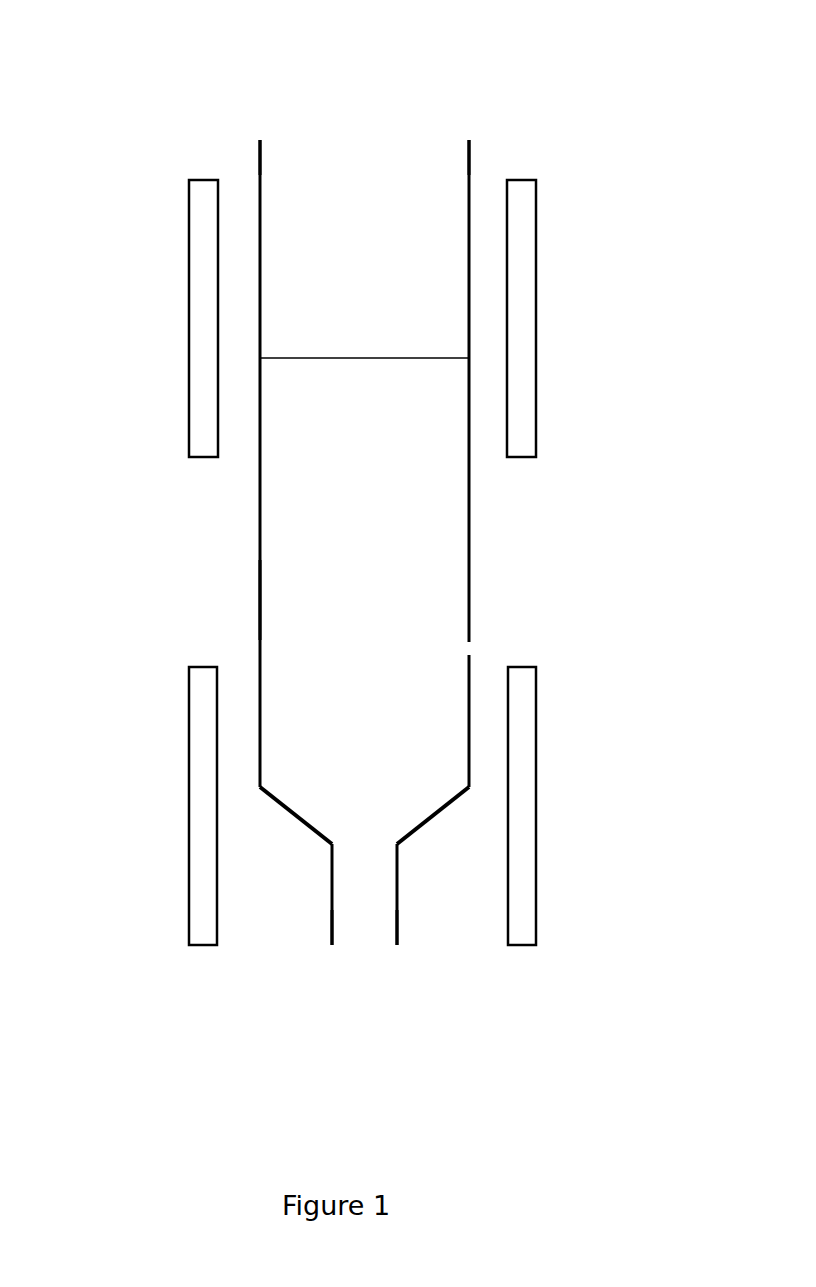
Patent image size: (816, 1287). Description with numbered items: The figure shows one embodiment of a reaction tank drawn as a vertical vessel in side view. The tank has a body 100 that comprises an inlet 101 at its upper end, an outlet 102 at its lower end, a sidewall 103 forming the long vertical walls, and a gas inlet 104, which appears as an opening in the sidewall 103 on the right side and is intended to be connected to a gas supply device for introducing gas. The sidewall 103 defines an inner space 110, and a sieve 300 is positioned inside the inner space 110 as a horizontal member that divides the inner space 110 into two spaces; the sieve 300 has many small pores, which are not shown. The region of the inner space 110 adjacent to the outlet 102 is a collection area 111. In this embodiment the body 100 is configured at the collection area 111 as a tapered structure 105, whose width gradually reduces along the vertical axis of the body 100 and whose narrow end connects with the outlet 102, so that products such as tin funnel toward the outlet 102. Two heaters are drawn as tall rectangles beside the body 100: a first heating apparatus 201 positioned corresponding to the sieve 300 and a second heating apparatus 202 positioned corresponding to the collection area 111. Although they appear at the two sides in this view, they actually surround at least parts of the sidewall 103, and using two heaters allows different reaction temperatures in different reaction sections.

The body 100 is at (260, 160).
The inlet 101 is at (397, 168).
The outlet 102 is at (372, 947).
The sidewall 103 is at (260, 536).
The gas inlet 104 is at (465, 648).
The tapered structure 105 is at (318, 837).
The inner space 110 is at (285, 595).
The collection area 111 is at (298, 780).
The first heating apparatus 201 is at (199, 306).
The second heating apparatus 202 is at (205, 895).
The sieve 300 is at (408, 358).